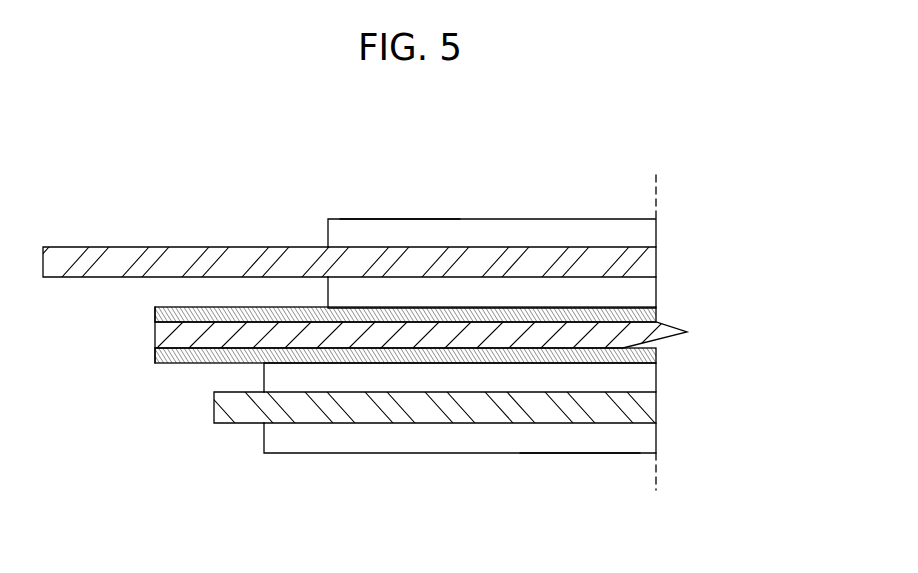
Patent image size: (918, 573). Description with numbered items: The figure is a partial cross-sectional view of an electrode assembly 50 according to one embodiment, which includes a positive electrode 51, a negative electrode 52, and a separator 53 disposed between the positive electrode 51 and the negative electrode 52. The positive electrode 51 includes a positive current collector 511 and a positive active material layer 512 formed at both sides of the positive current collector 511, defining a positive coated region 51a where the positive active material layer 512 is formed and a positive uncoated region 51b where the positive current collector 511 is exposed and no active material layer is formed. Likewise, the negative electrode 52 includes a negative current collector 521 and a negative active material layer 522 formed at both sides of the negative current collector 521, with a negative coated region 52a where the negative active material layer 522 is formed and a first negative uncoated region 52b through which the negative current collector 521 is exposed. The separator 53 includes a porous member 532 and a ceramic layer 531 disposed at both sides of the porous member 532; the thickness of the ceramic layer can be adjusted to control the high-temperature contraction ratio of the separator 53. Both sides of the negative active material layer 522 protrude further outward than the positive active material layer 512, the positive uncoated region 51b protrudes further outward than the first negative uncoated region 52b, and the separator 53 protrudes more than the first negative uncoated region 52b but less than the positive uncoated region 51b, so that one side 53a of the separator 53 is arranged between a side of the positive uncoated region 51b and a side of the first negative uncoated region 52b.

The electrode assembly 50 is at (613, 172).
The positive electrode 51 is at (355, 215).
The positive coated region 51a is at (401, 218).
The positive uncoated region 51b is at (184, 246).
The positive current collector 511 is at (486, 262).
The positive active material layer 512 is at (540, 235).
The negative electrode 52 is at (450, 462).
The negative coated region 52a is at (587, 455).
The first negative uncoated region 52b is at (232, 425).
The negative current collector 521 is at (402, 408).
The negative active material layer 522 is at (456, 440).
The separator 53 is at (430, 354).
The one side of the separator 53a is at (155, 334).
The ceramic layer 531 is at (624, 360).
The porous member 532 is at (642, 332).